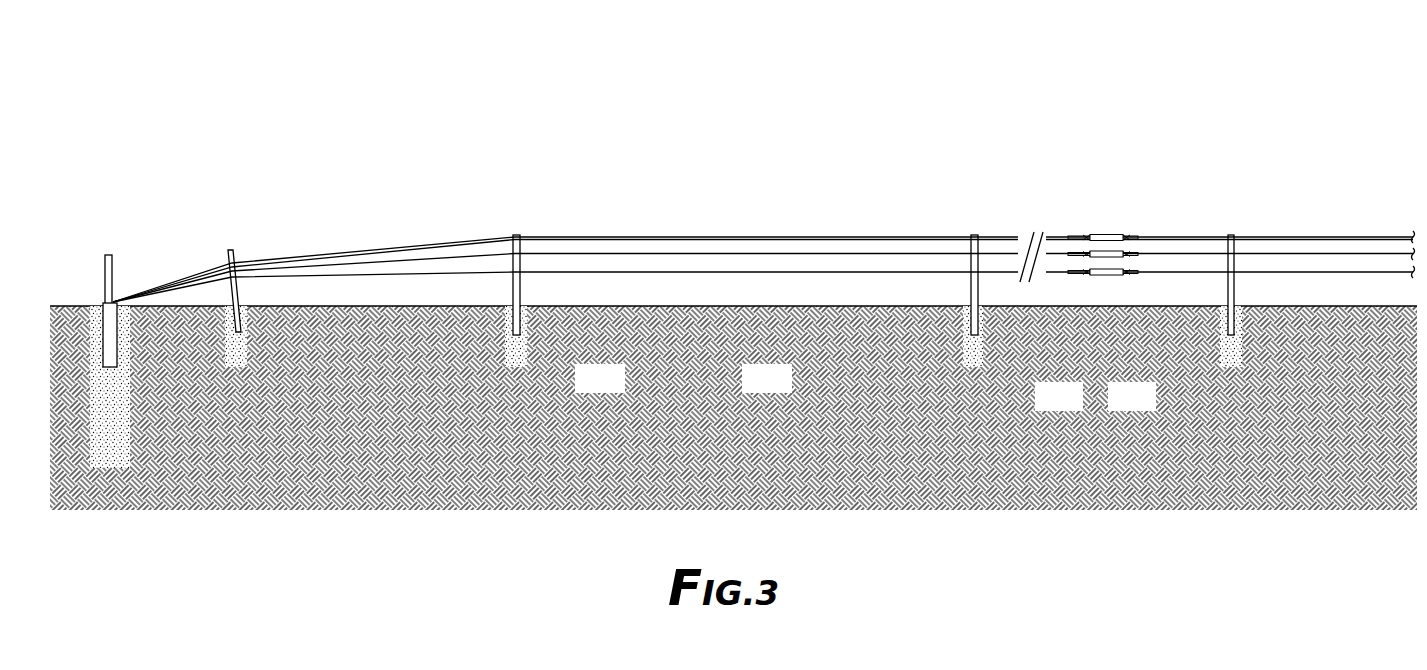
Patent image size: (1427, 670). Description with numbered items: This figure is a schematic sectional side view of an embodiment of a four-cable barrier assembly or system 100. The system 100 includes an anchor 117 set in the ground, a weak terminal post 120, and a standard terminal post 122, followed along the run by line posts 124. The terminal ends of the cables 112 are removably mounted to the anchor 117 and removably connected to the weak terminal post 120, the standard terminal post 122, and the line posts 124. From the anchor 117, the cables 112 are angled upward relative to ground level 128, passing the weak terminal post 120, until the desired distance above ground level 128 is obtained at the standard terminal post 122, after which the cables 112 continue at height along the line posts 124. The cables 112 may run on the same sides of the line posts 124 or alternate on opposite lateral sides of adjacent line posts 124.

The cable barrier system 100 is at (182, 121).
The cables 112 is at (368, 250).
The anchor 117 is at (132, 402).
The weak terminal post 120 is at (232, 263).
The standard terminal post 122 is at (526, 307).
The line posts 124 is at (983, 363).
The ground level 128 is at (716, 299).